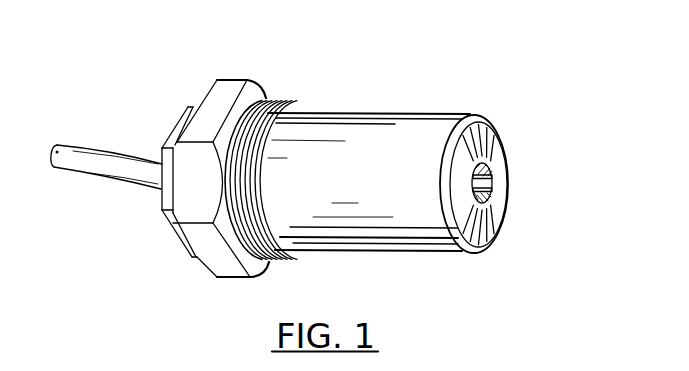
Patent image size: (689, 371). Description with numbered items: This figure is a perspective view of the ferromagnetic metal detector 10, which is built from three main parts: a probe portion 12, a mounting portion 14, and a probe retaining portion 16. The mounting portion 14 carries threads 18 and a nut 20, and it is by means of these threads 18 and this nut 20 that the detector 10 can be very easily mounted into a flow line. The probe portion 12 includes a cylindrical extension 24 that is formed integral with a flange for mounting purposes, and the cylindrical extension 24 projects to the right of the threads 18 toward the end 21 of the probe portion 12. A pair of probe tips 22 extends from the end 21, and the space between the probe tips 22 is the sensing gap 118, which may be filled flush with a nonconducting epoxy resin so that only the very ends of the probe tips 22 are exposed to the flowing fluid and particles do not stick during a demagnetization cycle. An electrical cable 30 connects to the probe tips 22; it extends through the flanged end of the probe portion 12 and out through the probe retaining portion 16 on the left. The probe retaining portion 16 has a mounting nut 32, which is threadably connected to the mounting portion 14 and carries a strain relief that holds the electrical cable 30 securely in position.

The ferromagnetic metal detector 10 is at (450, 80).
The probe portion 12 is at (365, 108).
The mounting portion 14 is at (247, 80).
The probe retaining portion 16 is at (163, 132).
The threads 18 is at (281, 108).
The nut 20 is at (230, 272).
The end 21 is at (500, 214).
The probe tips 22 is at (493, 189).
The cylindrical extension 24 is at (378, 176).
The electrical cable 30 is at (96, 176).
The mounting nut 32 is at (170, 233).
The sensing gap 118 is at (478, 188).